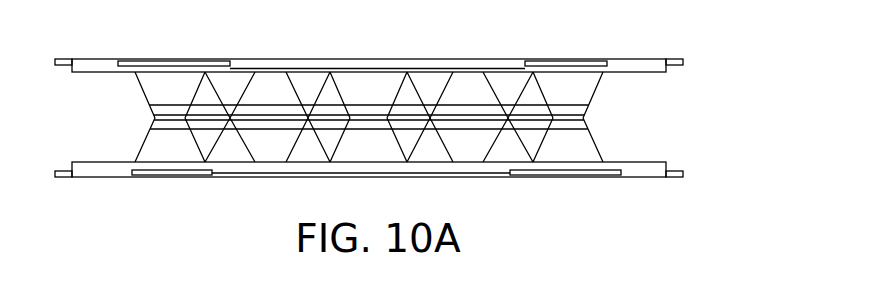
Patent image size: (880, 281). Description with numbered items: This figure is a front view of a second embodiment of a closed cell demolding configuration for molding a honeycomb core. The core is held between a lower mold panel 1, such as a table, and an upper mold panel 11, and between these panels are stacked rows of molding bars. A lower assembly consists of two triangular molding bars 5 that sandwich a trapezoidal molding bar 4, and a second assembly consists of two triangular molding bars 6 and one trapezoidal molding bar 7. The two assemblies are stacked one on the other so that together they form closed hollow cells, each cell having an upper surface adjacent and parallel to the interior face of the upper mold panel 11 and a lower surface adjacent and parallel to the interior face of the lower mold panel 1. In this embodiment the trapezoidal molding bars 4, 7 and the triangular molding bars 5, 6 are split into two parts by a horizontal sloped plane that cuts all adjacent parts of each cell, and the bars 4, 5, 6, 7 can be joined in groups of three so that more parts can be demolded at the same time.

The lower mold panel 1 is at (652, 168).
The upper mold panel 11 is at (647, 67).
The trapezoidal molding bar 4 is at (167, 152).
The triangular molding bar 5 is at (207, 140).
The triangular molding bar 6 is at (208, 96).
The trapezoidal molding bar 7 is at (164, 88).